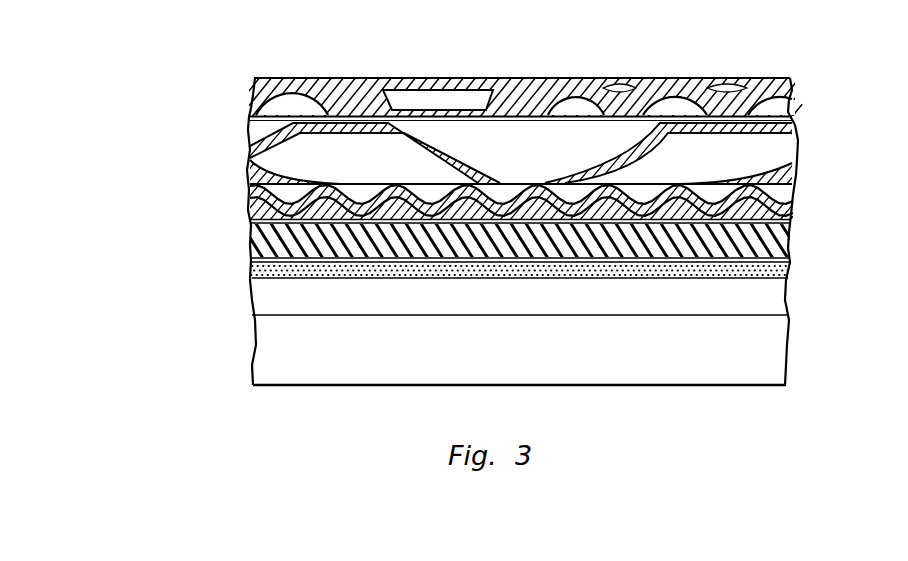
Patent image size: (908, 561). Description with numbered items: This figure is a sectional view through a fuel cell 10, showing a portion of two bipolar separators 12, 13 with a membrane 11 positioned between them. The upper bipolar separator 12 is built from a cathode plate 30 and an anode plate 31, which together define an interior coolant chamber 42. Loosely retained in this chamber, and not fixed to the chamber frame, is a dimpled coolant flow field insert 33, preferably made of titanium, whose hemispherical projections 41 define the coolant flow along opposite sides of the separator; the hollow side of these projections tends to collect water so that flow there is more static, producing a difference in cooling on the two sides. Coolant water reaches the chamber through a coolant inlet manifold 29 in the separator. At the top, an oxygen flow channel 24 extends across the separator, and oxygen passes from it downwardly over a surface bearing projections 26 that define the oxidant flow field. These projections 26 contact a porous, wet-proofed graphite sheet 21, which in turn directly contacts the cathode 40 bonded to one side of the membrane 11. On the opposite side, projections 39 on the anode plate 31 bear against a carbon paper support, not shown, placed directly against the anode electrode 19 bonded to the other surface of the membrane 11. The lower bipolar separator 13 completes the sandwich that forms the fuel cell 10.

The fuel cell 10 is at (163, 78).
The bipolar separator 12 is at (260, 78).
The bipolar separator 13 is at (255, 262).
The oxygen flow channel 24 is at (447, 78).
The projections 26 is at (720, 82).
The coolant inlet manifold 29 is at (820, 103).
The cathode plate 30 is at (262, 91).
The anode plate 31 is at (235, 183).
The coolant flow field insert 33 is at (815, 161).
The projections 39 is at (372, 198).
The hemispherical projections 41 is at (446, 156).
The interior coolant chamber 42 is at (548, 160).
The anode electrode 19 is at (789, 223).
The membrane 11 is at (790, 243).
The cathode 40 is at (257, 258).
The porous wet-proofed graphite sheet 21 is at (789, 271).